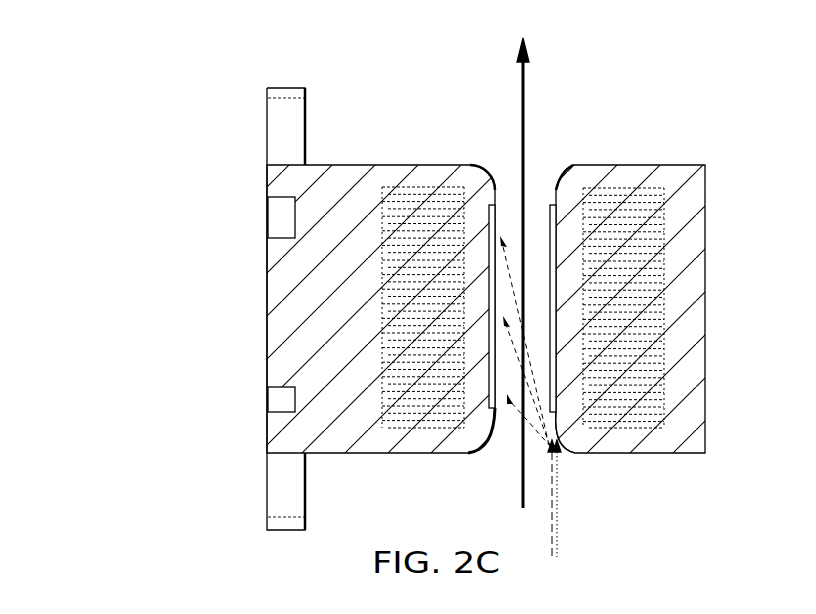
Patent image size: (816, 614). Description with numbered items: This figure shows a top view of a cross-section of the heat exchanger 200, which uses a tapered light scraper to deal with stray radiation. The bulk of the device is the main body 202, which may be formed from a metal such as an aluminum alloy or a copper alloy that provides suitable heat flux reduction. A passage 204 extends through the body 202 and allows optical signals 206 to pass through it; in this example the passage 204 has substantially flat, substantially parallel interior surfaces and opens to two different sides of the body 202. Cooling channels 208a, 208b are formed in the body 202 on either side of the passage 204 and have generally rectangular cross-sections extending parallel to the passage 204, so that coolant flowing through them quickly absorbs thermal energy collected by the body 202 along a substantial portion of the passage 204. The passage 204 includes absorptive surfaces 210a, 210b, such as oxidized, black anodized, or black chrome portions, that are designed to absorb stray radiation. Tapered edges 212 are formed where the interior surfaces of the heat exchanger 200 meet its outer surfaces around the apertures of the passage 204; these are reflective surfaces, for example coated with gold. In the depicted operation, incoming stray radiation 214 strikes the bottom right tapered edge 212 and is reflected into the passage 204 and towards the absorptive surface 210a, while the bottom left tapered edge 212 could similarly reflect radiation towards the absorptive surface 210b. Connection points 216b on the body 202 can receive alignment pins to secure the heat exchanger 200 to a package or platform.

The heat exchanger 200 is at (662, 64).
The main body 202 is at (407, 165).
The passage 204 is at (503, 448).
The optical signals 206 is at (528, 80).
The cooling channel 208a is at (393, 432).
The cooling channel 208b is at (623, 430).
The absorptive surface 210a is at (497, 235).
The absorptive surface 210b is at (552, 235).
The tapered edges 212 is at (568, 441).
The incoming stray radiation 214 is at (563, 537).
The connection points 216b is at (271, 214).